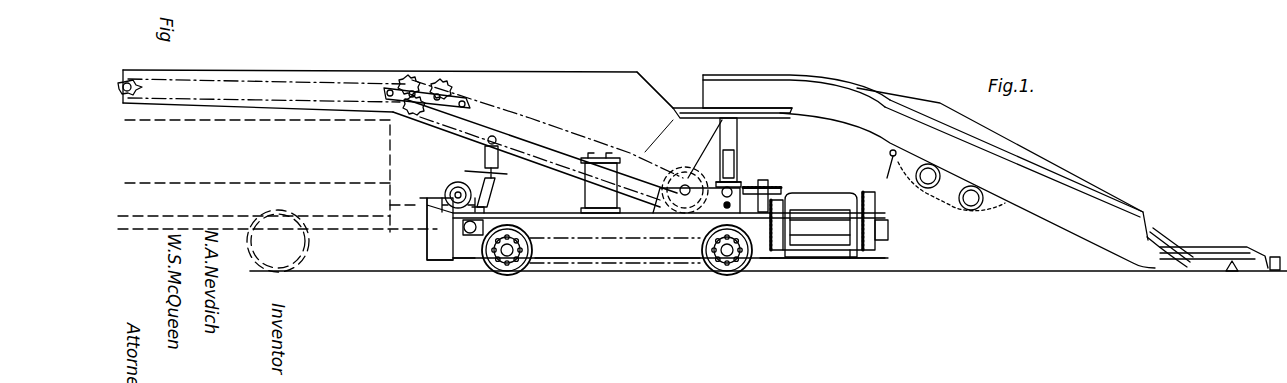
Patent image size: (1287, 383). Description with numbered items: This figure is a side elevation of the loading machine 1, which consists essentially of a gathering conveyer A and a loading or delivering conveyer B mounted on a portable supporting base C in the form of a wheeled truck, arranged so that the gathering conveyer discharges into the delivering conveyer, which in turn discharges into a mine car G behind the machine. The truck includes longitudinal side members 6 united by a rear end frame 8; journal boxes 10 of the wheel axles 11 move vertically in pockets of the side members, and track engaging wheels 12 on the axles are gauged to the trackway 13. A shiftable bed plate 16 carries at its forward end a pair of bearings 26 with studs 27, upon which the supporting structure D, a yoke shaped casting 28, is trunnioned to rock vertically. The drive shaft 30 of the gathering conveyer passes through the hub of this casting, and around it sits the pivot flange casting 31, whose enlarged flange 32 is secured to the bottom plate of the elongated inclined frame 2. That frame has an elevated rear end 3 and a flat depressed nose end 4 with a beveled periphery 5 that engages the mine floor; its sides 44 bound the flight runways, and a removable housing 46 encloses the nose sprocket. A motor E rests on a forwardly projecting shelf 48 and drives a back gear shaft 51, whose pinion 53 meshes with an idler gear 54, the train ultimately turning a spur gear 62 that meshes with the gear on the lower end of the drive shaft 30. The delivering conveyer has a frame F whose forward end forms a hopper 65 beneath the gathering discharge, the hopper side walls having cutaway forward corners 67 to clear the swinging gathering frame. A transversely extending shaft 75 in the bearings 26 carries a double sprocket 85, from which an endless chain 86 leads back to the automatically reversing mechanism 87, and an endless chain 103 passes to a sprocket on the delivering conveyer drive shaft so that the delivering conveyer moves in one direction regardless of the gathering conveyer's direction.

The endless chain 103 is at (232, 76).
The frame F is at (367, 70).
The mine car G is at (277, 196).
The automatically reversing mechanism 87 is at (414, 110).
The hopper 65 is at (538, 143).
The endless chain 86 is at (493, 104).
The loading or delivering conveyer B is at (565, 80).
The cutaway forward corners 67 is at (663, 80).
The pivot flange casting 31 is at (711, 106).
The elevated rear end 3 is at (753, 83).
The enlarged flange 32 is at (707, 122).
The supporting structure D is at (737, 153).
The gathering conveyer A is at (1068, 148).
The sides of the frame 44 is at (970, 138).
The loading machine 1 is at (1145, 183).
The elongated inclined frame 2 is at (1010, 200).
The flat depressed nose end 4 is at (1185, 265).
The removable housing 46 is at (1222, 253).
The beveled periphery 5 is at (1245, 272).
The portable supporting base C is at (627, 255).
The rear end frame 8 is at (440, 250).
The longitudinal side members 6 is at (615, 239).
The track engaging wheels 12 is at (518, 268).
The wheel axles 11 is at (498, 258).
The journal boxes 10 is at (690, 262).
The shiftable bed plate 16 is at (695, 218).
The double sprocket 85 is at (680, 187).
The transversely extending shaft 75 is at (722, 190).
The yoke shaped casting 28 is at (737, 160).
The bearings 26 is at (707, 195).
The studs 27 is at (762, 183).
The spur gear 62 is at (781, 187).
The motor E is at (817, 207).
The drive shaft 30 is at (777, 252).
The idler gear 54 is at (880, 201).
The pinion 53 is at (885, 235).
The shelf 48 is at (823, 262).
The back gear shaft 51 is at (850, 258).
The trackway 13 is at (918, 275).